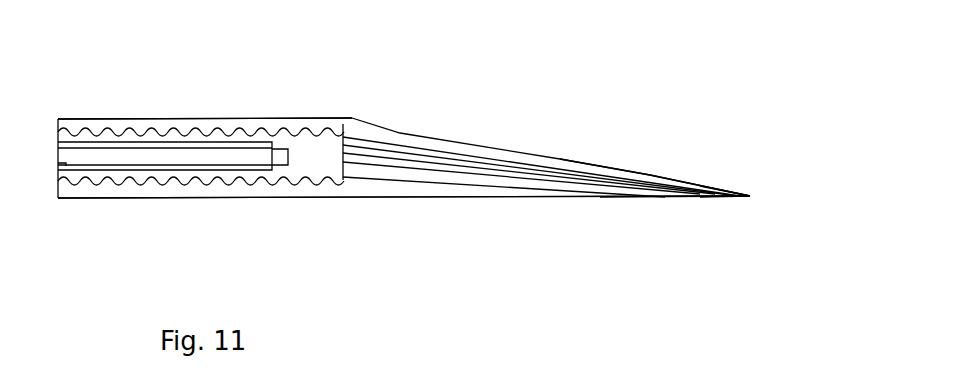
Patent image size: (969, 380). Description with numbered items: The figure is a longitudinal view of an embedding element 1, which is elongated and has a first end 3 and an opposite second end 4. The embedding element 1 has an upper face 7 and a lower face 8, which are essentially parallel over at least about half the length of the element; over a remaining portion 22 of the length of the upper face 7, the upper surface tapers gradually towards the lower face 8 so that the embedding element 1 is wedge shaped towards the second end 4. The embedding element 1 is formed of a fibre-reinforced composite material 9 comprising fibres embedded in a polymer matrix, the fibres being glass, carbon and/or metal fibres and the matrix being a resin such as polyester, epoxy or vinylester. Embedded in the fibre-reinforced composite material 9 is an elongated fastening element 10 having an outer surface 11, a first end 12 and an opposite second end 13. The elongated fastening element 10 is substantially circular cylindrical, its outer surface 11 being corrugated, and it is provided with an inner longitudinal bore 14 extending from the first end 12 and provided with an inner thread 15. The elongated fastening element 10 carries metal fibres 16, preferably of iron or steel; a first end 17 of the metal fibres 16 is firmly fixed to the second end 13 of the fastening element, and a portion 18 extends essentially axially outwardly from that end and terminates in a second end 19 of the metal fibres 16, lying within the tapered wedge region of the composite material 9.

The embedding element 1 is at (321, 99).
The first end 3 is at (57, 192).
The second end 4 is at (750, 196).
The upper face 7 is at (180, 118).
The lower face 8 is at (205, 198).
The fibre-reinforced composite material 9 is at (388, 130).
The elongated fastening element 10 is at (320, 187).
The outer surface 11 is at (262, 118).
The first end 12 is at (53, 120).
The second end 13 is at (363, 124).
The inner longitudinal bore 14 is at (58, 163).
The inner thread 15 is at (140, 118).
The metal fibres 16 is at (551, 177).
The first end 17 is at (362, 183).
The portion 18 is at (495, 165).
The second end 19 is at (652, 187).
The remaining portion 22 is at (594, 165).